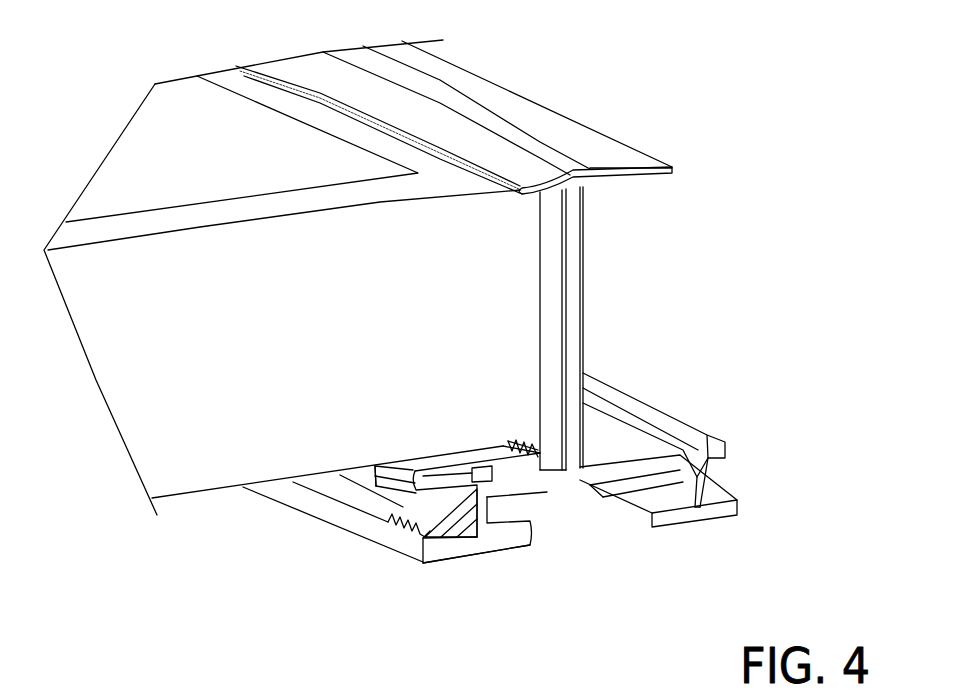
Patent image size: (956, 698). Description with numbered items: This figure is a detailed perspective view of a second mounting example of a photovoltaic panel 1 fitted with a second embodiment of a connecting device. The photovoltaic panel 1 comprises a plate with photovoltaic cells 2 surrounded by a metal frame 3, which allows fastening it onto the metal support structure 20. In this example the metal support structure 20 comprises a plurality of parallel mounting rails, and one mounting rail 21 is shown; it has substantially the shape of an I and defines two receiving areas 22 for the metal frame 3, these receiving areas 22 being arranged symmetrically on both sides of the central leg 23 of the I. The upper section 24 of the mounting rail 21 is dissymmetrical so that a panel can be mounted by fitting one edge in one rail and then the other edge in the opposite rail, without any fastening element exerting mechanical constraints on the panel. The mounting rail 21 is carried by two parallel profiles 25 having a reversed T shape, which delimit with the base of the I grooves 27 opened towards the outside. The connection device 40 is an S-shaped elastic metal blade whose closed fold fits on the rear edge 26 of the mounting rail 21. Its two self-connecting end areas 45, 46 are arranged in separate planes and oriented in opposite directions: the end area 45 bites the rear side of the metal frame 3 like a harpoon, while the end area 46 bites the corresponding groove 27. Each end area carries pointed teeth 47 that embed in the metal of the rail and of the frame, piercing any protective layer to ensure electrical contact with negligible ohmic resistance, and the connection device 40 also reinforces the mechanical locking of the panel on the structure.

The photovoltaic panel 1 is at (106, 108).
The plate with photovoltaic cells 2 is at (115, 182).
The metal frame 3 is at (218, 75).
The metal support structure 20 is at (640, 105).
The mounting rail 21 is at (675, 160).
The receiving area 22 is at (640, 442).
The central leg 23 is at (576, 317).
The upper section 24 is at (546, 111).
The profile 25 is at (714, 510).
The rear edge 26 is at (433, 493).
The groove 27 is at (425, 539).
The connection device 40 is at (382, 511).
The self-connecting end area 45 is at (513, 436).
The self-connecting end area 46 is at (400, 534).
The teeth 47 is at (400, 515).